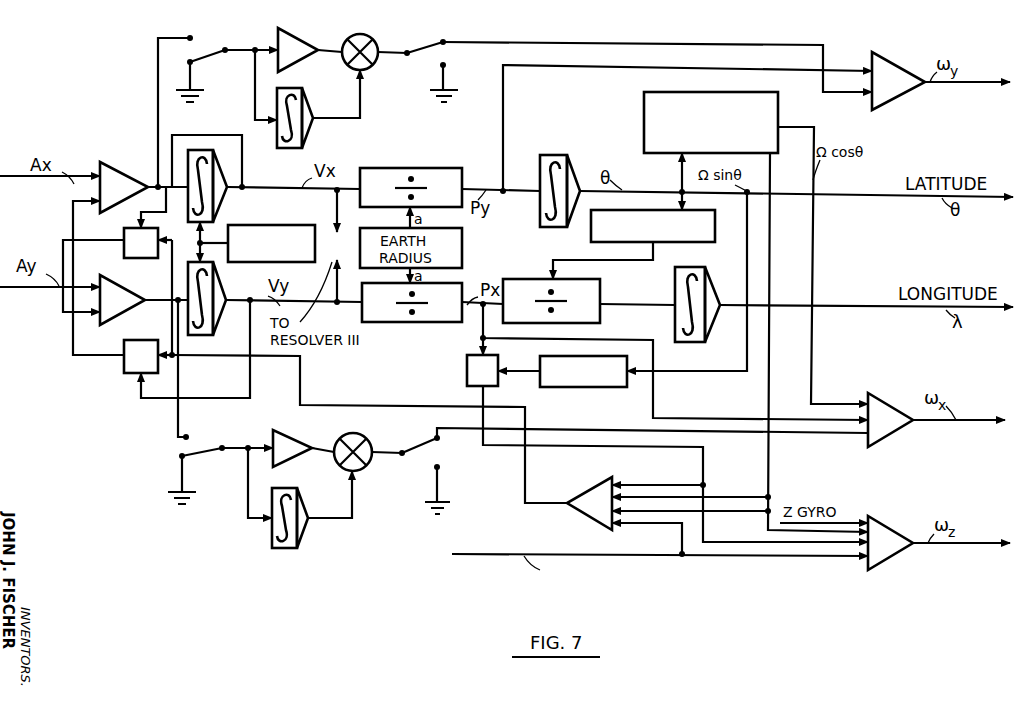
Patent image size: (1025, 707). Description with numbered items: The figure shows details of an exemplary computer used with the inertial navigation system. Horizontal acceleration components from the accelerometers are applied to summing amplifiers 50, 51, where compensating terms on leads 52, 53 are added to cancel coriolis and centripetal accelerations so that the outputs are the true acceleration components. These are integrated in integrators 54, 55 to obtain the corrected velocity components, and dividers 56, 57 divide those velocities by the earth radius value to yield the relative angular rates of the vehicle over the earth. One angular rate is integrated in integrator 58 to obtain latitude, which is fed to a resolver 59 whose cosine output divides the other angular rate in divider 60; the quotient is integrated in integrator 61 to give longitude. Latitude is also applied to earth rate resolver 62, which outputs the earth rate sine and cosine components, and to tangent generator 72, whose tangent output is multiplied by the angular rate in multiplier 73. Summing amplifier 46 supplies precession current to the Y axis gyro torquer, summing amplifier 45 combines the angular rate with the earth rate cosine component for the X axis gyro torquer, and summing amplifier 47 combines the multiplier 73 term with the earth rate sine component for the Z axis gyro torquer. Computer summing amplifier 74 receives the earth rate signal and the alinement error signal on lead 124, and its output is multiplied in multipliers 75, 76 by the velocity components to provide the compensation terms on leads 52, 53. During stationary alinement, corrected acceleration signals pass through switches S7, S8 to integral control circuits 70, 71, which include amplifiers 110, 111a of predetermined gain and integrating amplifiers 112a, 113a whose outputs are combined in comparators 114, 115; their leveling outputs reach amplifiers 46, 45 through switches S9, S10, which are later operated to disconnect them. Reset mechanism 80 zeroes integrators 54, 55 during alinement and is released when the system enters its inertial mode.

The summing amplifier 45 is at (880, 408).
The summing amplifier 46 is at (882, 92).
The summing amplifier 47 is at (876, 530).
The summing amplifier 50 is at (122, 180).
The summing amplifier 51 is at (104, 278).
The lead carrying compensating term 52 is at (72, 224).
The lead carrying compensating term 53 is at (63, 256).
The integrator 54 is at (224, 200).
The integrator 55 is at (222, 296).
The divider 56 is at (432, 170).
The divider 57 is at (448, 285).
The integrator 58 is at (560, 164).
The resolver 59 is at (594, 238).
The divider 60 is at (596, 316).
The integrator 61 is at (710, 330).
The earth rate resolver 62 is at (644, 112).
The integral control circuit 70 is at (326, 38).
The integral control circuit 71 is at (316, 440).
The tangent generator 72 is at (610, 382).
The multiplier 73 is at (467, 376).
The computer summing amplifier 74 is at (600, 490).
The multiplier 75 is at (126, 360).
The multiplier 76 is at (122, 236).
The reset mechanism 80 is at (278, 228).
The amplifier 110 is at (290, 42).
The amplifier 111a is at (288, 440).
The integrating amplifier 112a is at (312, 130).
The integrating amplifier 113a is at (300, 500).
The comparator 114 is at (372, 40).
The comparator 115 is at (364, 438).
The lead 124 is at (530, 553).
The switch S7 is at (250, 47).
The switch S8 is at (230, 444).
The switch S9 is at (480, 72).
The switch S10 is at (478, 464).